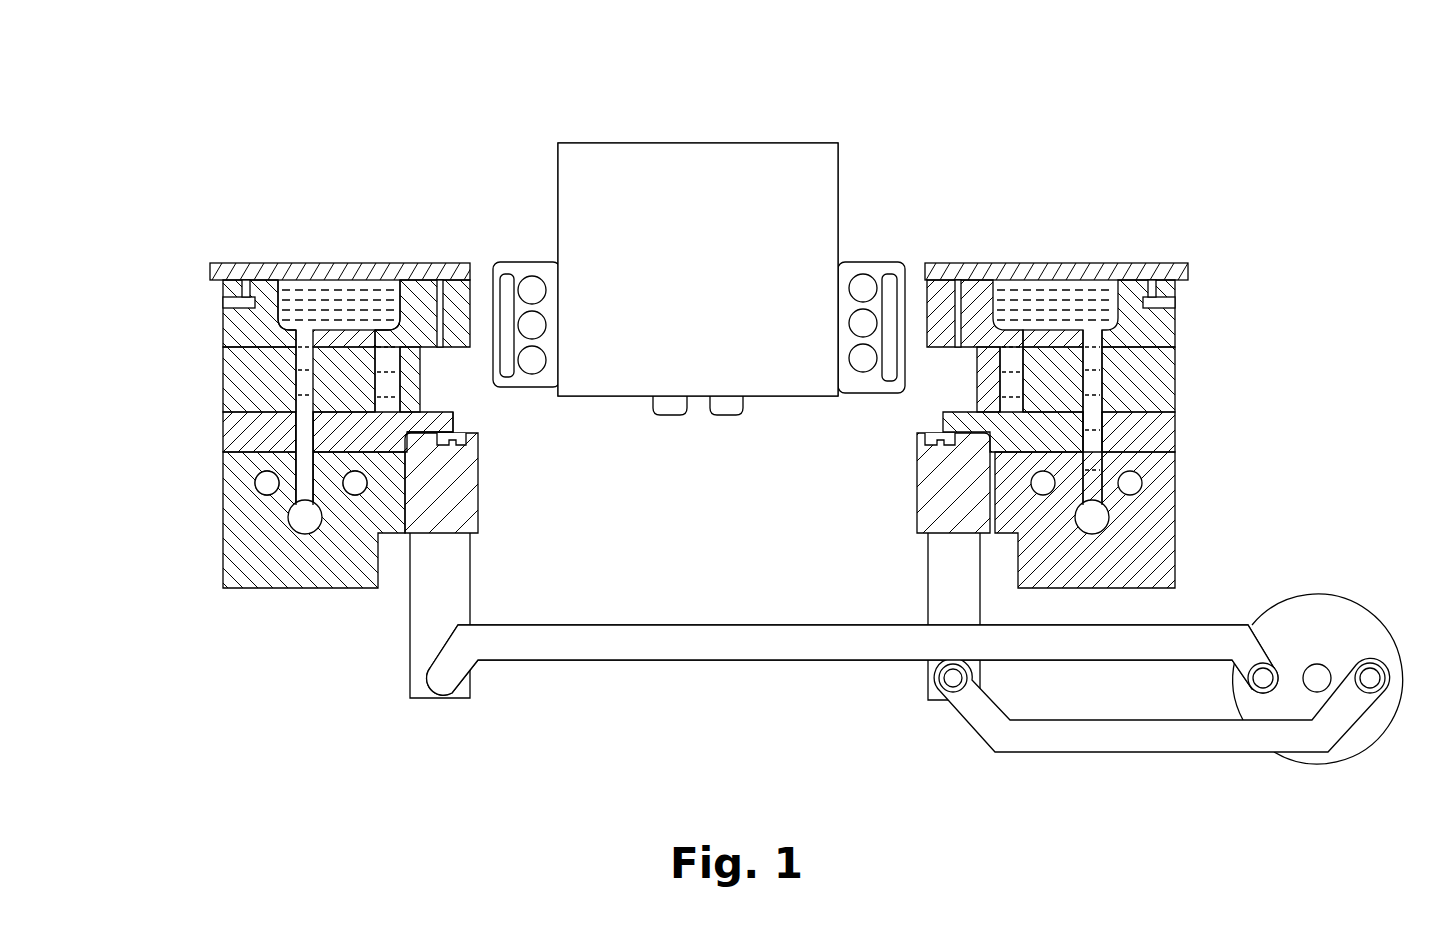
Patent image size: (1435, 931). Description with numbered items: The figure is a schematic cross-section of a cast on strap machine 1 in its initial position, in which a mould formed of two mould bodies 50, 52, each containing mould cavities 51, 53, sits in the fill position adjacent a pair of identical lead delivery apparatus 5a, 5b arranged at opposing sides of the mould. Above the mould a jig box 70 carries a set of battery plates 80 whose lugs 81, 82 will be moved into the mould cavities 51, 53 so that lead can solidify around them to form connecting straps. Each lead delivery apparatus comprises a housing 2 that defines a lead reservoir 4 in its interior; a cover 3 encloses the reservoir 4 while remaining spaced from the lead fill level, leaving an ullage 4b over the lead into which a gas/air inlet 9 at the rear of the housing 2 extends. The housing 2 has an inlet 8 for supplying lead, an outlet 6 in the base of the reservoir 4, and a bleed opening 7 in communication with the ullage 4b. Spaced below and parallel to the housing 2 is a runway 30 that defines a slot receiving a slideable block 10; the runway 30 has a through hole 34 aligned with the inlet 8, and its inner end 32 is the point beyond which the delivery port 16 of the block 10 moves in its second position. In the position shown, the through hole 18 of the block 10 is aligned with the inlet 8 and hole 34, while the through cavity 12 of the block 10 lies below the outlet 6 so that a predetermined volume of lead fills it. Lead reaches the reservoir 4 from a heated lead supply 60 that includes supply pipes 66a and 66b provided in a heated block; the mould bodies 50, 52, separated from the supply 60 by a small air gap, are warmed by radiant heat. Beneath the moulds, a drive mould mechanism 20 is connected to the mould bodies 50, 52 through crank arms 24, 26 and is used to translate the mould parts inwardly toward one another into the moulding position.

The cast on strap machine 1 is at (1053, 107).
The housing 2 is at (223, 330).
The cover 3 is at (371, 268).
The lead reservoir 4 is at (298, 297).
The ullage 4b is at (334, 290).
The lead delivery apparatus 5a is at (165, 210).
The lead delivery apparatus 5b is at (1180, 213).
The outlet 6 is at (388, 347).
The bleed opening 7 is at (442, 300).
The inlet 8 is at (303, 348).
The gas/air inlet 9 is at (233, 301).
The block 10 is at (223, 360).
The through cavity 12 is at (403, 377).
The delivery port 16 is at (465, 465).
The through hole 18 is at (305, 375).
The drive mould mechanism 20 is at (1350, 570).
The crank arm 24 is at (826, 643).
The crank arm 26 is at (1060, 742).
The runway 30 is at (300, 428).
The end of the runway 32 is at (445, 422).
The through hole 34 is at (245, 451).
The mould body 50 is at (455, 512).
The mould cavity 51 is at (460, 440).
The mould body 52 is at (928, 480).
The mould cavity 53 is at (922, 436).
The lead supply 60 is at (242, 590).
The supply pipe 66a is at (298, 518).
The supply pipe 66b is at (1098, 517).
The jig box 70 is at (878, 262).
The set of battery plates 80 is at (712, 277).
The lug 81 is at (671, 415).
The lug 82 is at (728, 415).